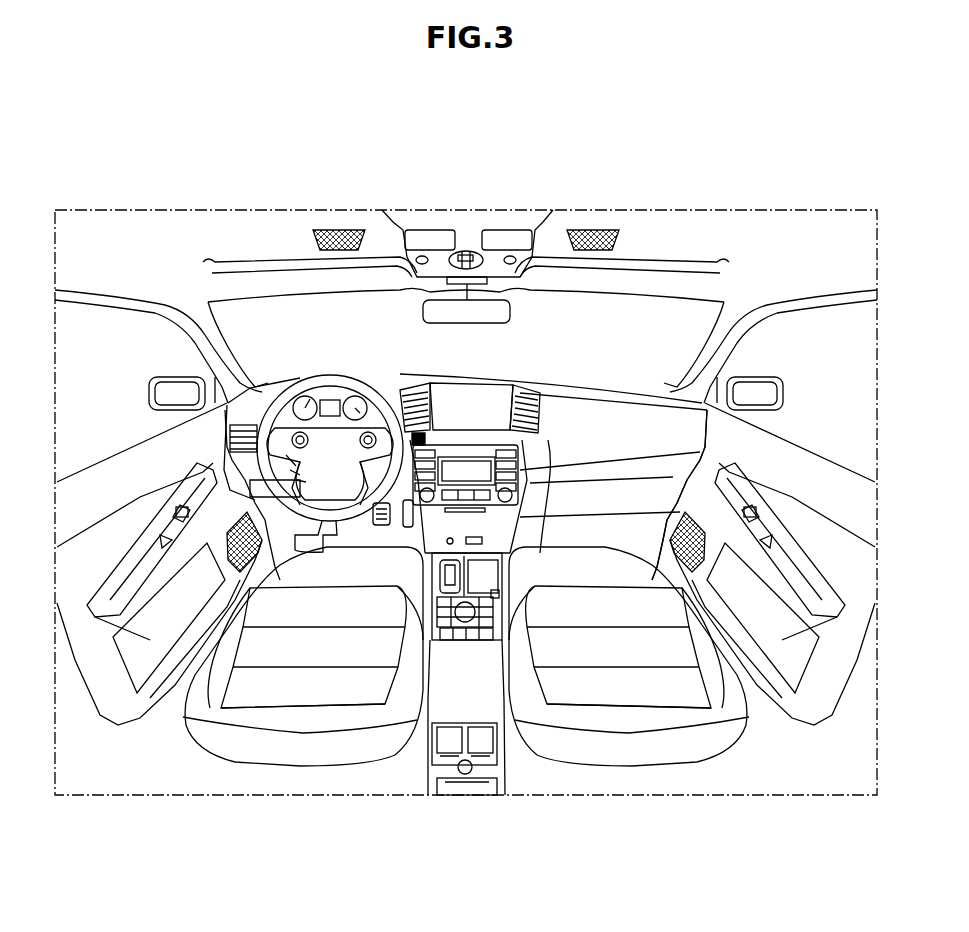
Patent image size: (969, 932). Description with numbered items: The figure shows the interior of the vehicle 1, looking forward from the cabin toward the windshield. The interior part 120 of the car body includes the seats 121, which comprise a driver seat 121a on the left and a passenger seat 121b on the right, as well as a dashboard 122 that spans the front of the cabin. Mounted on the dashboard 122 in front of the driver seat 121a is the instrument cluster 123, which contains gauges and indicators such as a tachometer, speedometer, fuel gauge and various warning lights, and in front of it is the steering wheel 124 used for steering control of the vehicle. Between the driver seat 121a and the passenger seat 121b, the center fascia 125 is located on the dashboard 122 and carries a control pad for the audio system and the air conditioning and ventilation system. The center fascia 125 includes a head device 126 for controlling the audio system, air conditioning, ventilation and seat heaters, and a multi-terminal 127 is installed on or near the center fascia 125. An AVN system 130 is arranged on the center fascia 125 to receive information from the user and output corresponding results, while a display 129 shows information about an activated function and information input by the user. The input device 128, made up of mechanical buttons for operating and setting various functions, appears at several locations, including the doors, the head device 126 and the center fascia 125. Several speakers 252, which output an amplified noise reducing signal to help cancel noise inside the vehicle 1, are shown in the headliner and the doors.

The vehicle 1 is at (252, 156).
The interior part 120 is at (643, 237).
The seats 121 is at (648, 853).
The driver seat 121a is at (293, 750).
The passenger seat 121b is at (648, 750).
The dashboard 122 is at (637, 407).
The instrument cluster 123 is at (316, 390).
The steering wheel 124 is at (335, 378).
The center fascia 125 is at (480, 520).
The head device 126 is at (520, 470).
The multi-terminal 127 is at (500, 543).
The input device 128 is at (472, 248).
The display 129 is at (465, 470).
The AVN system 130 is at (499, 385).
The speaker 252 is at (590, 252).